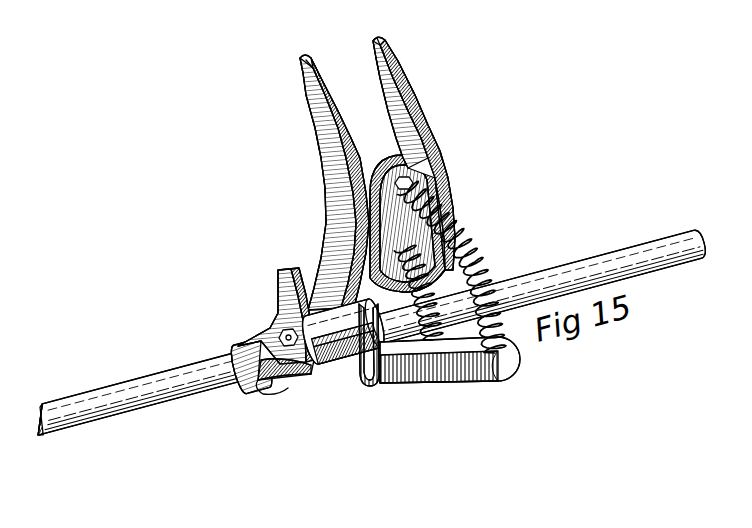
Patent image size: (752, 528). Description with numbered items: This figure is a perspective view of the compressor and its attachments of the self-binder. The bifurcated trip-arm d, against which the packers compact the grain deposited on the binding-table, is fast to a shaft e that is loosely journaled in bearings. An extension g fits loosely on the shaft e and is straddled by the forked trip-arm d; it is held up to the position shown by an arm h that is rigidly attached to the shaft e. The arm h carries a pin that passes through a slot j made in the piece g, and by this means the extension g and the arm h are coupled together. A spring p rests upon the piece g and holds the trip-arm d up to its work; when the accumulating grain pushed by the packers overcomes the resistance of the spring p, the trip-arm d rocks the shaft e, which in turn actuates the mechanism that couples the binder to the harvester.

The bifurcated trip-arm d is at (386, 173).
The spring p is at (452, 267).
The arm h is at (271, 331).
The shaft e is at (369, 332).
The slot j is at (357, 381).
The extension g is at (450, 366).